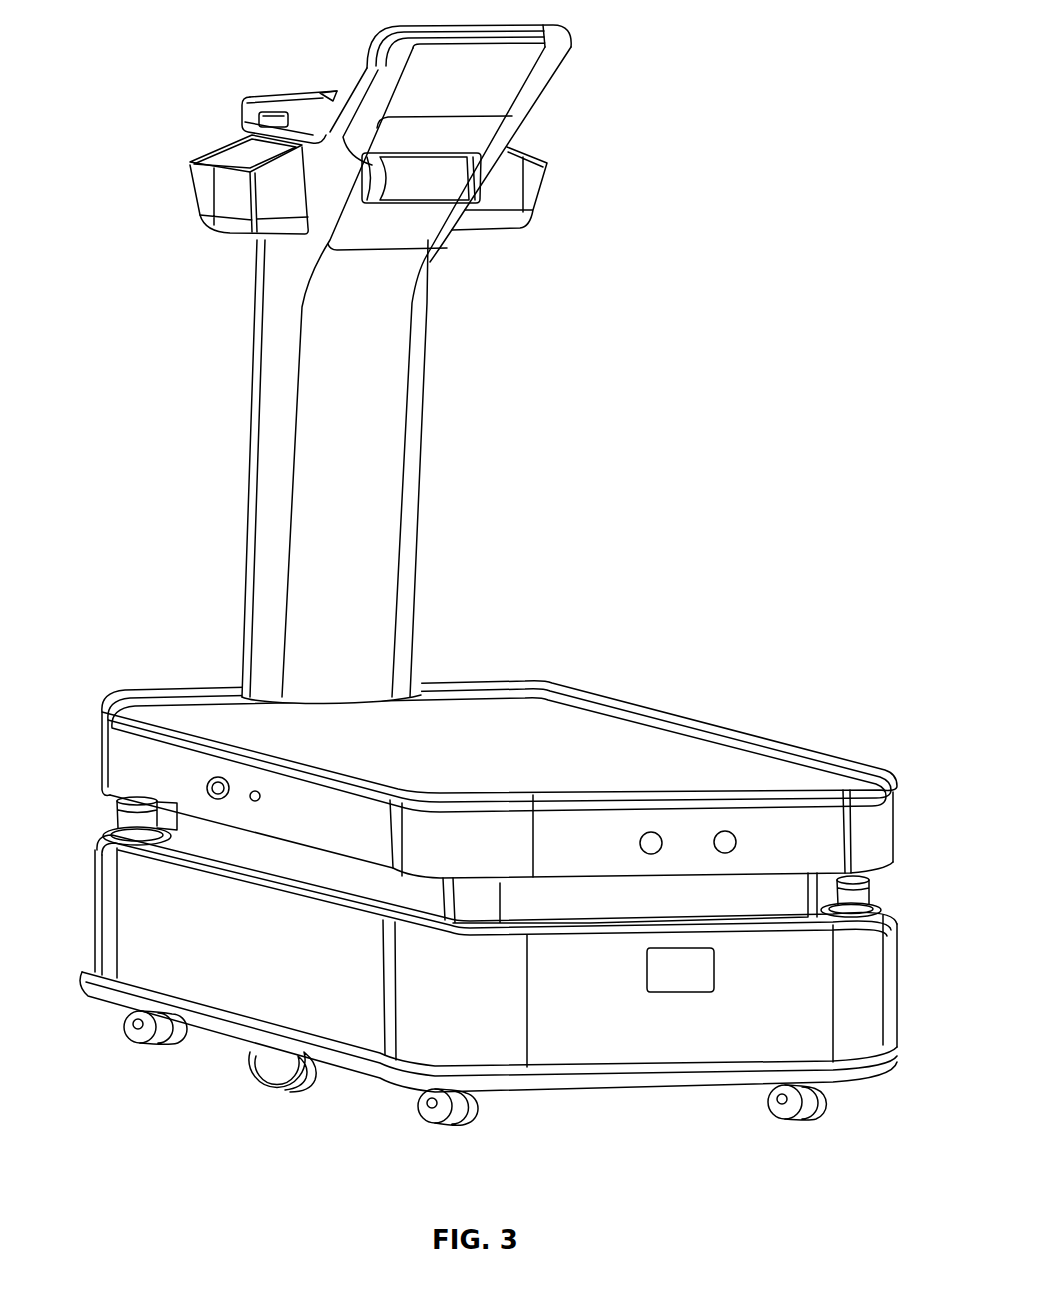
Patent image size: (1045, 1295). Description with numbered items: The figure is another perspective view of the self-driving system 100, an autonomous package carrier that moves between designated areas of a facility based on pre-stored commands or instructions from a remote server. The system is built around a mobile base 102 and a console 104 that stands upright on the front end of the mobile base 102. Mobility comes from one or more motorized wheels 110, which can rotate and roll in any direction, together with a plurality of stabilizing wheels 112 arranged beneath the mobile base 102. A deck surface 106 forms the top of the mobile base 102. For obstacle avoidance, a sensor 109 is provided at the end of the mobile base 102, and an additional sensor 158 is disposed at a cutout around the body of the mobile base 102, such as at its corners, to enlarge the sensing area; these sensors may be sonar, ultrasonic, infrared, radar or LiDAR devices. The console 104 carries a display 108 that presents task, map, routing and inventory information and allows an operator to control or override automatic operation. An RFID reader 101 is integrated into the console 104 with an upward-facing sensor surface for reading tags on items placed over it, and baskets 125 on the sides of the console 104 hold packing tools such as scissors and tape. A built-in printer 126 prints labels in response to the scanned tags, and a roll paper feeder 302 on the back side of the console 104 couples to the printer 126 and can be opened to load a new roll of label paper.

The self-driving system 100 is at (194, 34).
The RFID reader 101 is at (296, 98).
The mobile base 102 is at (80, 947).
The console 104 is at (462, 436).
The deck 106 is at (665, 753).
The display 108 is at (557, 82).
The sensor 109 is at (250, 783).
The motorized wheel 110 is at (287, 1087).
The stabilizing wheel 112 is at (177, 1043).
The basket 125 is at (210, 200).
The printer 126 is at (387, 233).
The sensor 158 is at (127, 820).
The roll paper feeder 302 is at (430, 194).